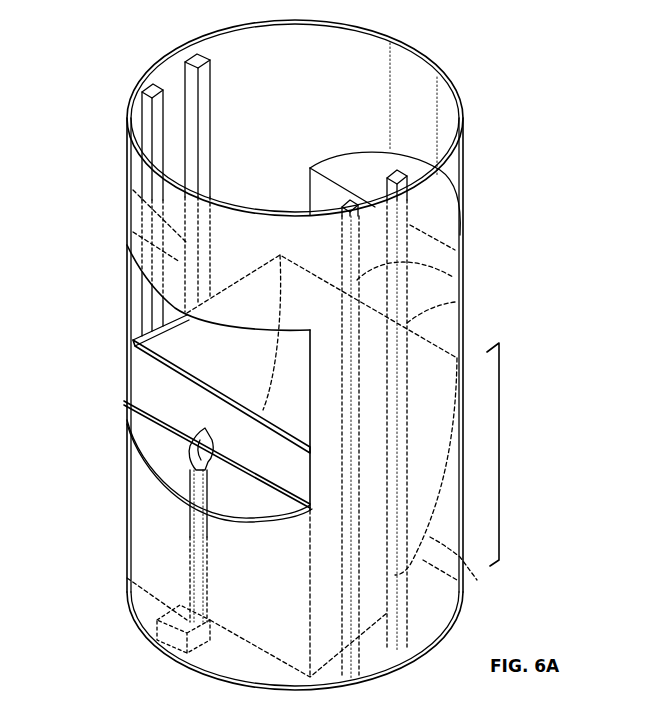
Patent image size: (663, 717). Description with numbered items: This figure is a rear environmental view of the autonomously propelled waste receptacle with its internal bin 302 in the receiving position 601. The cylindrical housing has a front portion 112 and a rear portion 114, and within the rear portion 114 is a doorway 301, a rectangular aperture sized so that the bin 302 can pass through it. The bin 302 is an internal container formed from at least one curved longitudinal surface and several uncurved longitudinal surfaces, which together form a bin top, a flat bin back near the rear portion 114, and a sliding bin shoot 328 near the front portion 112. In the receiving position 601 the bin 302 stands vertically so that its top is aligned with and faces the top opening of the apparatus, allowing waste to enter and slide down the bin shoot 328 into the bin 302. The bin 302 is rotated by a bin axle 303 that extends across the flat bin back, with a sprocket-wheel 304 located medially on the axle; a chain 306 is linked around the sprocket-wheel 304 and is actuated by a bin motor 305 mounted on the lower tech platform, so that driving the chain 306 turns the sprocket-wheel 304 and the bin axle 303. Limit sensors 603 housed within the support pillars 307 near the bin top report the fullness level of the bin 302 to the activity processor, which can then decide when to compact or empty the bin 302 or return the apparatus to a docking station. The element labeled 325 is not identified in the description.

The front portion 112 is at (463, 172).
The rear portion 114 is at (127, 160).
The hidden support element 325 is at (413, 90).
The support pillars 307 is at (462, 302).
The doorway 301 is at (128, 318).
The limit sensors 603 is at (150, 213).
The bin 302 is at (152, 372).
The bin axle 303 is at (153, 430).
The sprocket-wheel 304 is at (192, 440).
The chain 306 is at (185, 573).
The bin motor 305 is at (165, 648).
The receiving position 601 is at (499, 424).
The bin shoot 328 is at (464, 550).